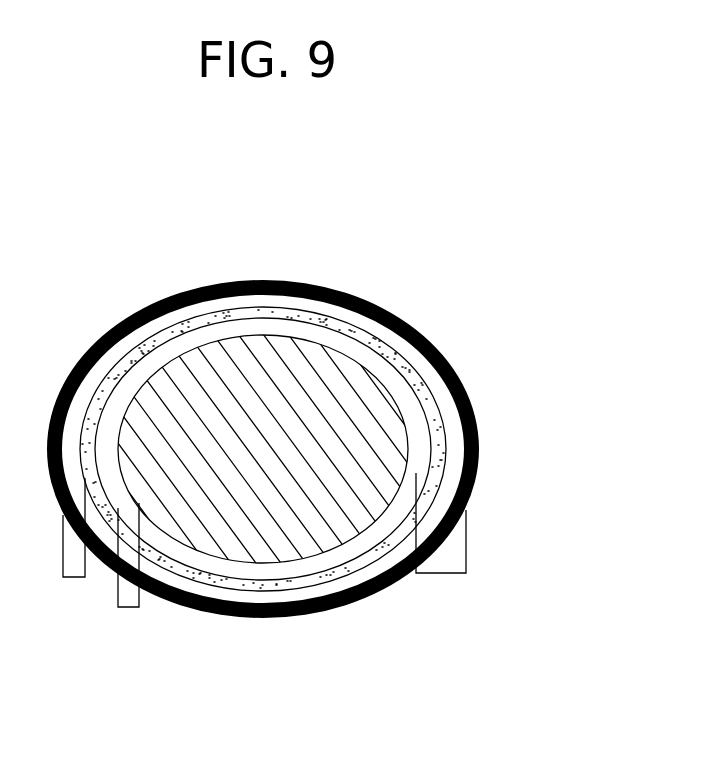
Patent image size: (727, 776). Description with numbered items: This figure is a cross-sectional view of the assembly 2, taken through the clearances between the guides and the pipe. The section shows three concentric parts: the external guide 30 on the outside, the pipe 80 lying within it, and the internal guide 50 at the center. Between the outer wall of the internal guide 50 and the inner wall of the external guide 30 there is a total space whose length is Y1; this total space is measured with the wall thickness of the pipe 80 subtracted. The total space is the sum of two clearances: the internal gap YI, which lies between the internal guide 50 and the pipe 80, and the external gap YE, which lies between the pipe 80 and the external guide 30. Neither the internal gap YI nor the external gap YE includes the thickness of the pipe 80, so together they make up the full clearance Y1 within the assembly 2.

The assembly 2 is at (538, 288).
The external guide 30 is at (260, 280).
The pipe 80 is at (305, 311).
The internal guide 50 is at (352, 375).
The external gap YE is at (73, 577).
The internal gap YI is at (128, 607).
The total space length Y1 is at (441, 573).